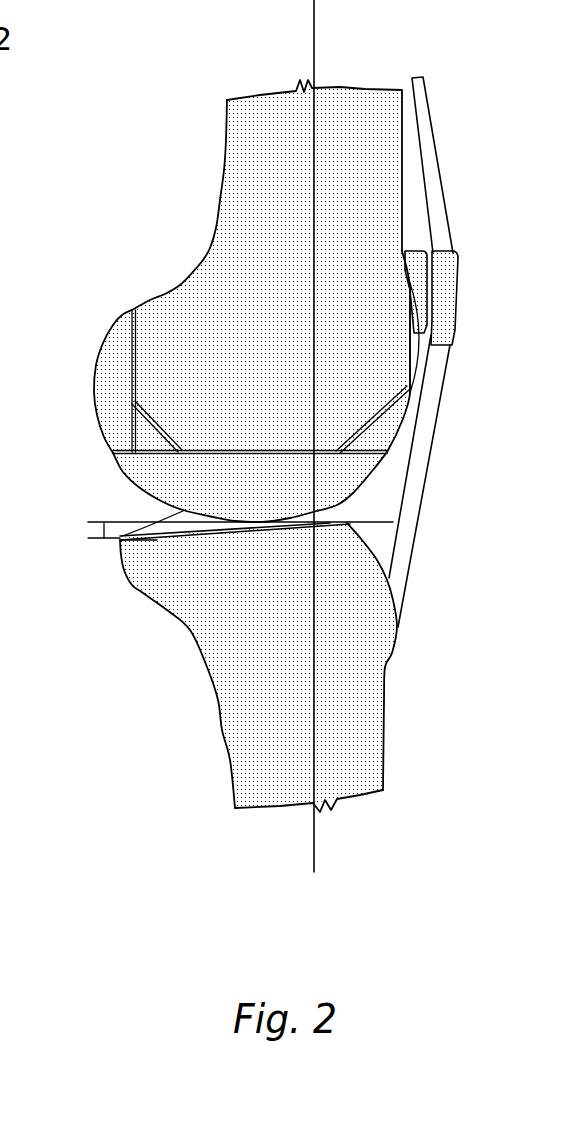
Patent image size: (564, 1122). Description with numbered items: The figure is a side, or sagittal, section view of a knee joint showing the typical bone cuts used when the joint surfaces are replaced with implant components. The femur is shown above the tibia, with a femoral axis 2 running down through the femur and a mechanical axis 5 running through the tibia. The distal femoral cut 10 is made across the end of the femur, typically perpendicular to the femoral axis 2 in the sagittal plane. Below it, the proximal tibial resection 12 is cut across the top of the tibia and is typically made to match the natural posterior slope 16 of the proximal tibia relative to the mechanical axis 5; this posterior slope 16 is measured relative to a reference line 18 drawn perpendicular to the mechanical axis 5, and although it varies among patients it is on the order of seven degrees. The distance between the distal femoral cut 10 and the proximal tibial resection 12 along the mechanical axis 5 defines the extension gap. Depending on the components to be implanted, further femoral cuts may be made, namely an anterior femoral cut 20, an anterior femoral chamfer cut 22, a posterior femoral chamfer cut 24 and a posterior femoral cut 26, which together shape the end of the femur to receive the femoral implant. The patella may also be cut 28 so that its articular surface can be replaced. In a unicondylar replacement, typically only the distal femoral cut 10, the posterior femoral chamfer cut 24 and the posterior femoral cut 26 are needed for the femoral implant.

The femoral axis 2 is at (314, 43).
The mechanical axis 5 is at (313, 843).
The distal femoral cut 10 is at (370, 477).
The proximal tibial resection 12 is at (157, 540).
The posterior slope 16 is at (105, 523).
The reference line 18 is at (88, 523).
The anterior femoral cut 20 is at (414, 349).
The anterior femoral chamfer cut 22 is at (404, 428).
The posterior femoral chamfer cut 24 is at (133, 419).
The posterior femoral cut 26 is at (130, 370).
The patellar cut 28 is at (444, 284).